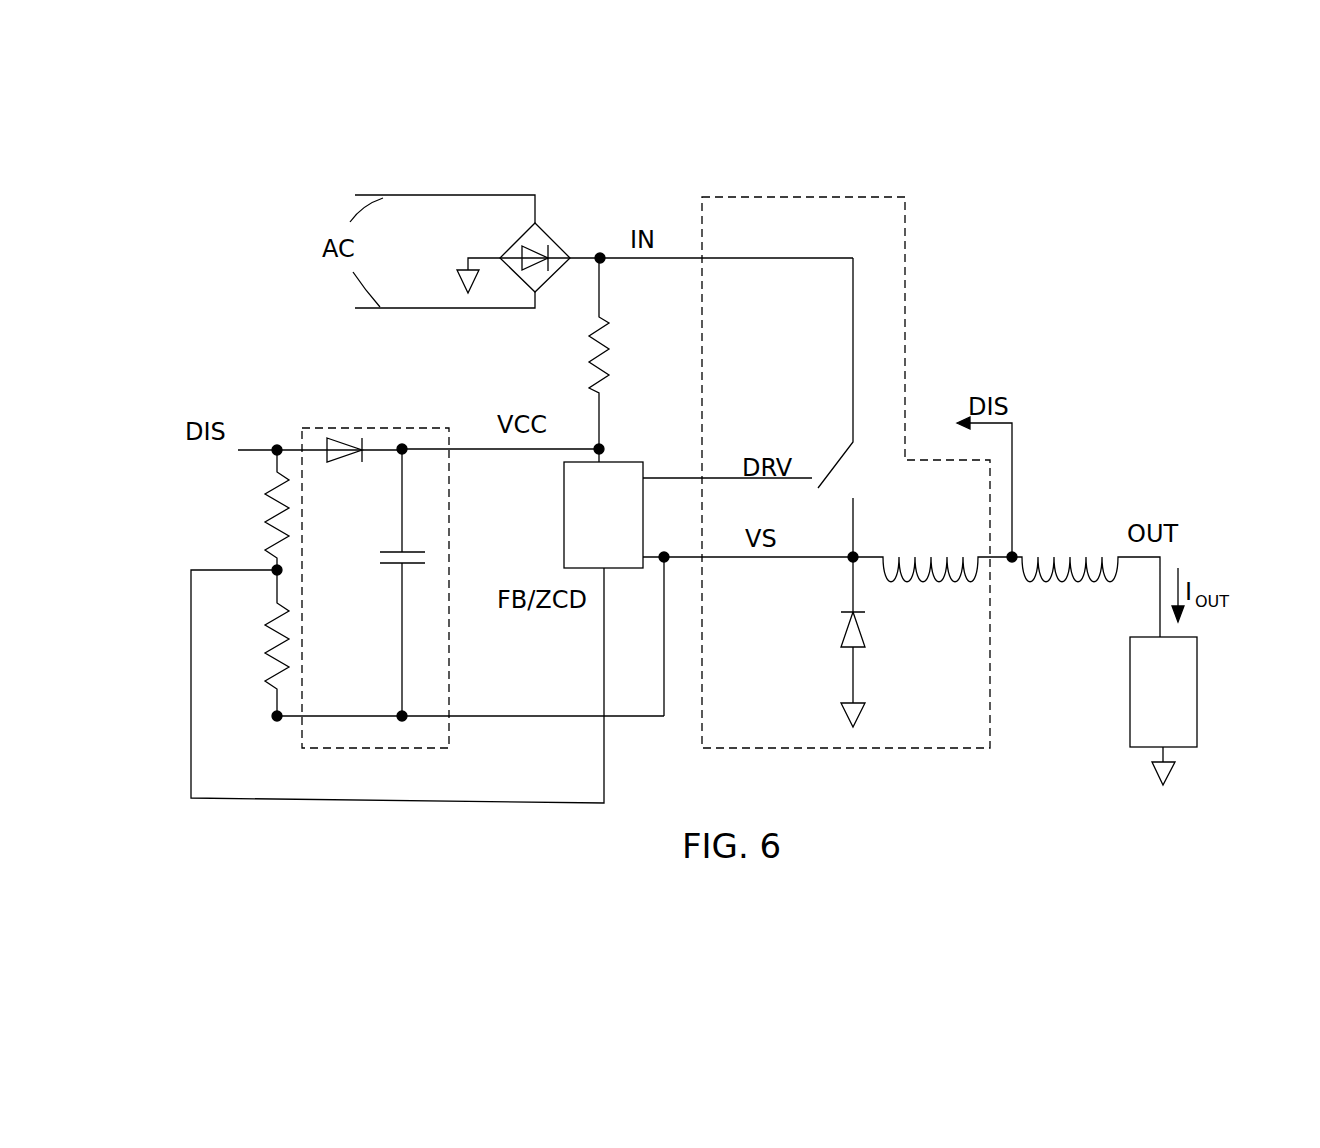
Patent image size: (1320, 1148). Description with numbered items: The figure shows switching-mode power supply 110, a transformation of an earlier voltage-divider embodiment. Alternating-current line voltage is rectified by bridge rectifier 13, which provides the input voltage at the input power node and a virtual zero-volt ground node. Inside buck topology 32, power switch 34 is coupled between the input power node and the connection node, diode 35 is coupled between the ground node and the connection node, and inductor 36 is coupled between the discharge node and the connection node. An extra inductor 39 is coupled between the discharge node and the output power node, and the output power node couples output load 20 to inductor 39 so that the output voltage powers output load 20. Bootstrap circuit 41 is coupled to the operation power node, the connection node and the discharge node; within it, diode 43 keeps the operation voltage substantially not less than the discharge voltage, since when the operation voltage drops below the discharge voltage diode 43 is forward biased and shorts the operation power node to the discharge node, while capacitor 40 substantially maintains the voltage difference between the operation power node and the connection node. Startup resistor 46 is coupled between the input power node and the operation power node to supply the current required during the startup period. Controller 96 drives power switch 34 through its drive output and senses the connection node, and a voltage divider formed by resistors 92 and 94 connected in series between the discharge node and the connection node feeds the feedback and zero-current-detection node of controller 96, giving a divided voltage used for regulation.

The bridge rectifier 13 is at (522, 238).
The switching-mode power supply 110 is at (648, 172).
The startup resistor 46 is at (588, 315).
The controller 96 is at (617, 533).
The bootstrap circuit 41 is at (433, 428).
The diode 43 is at (350, 442).
The capacitor 40 is at (375, 558).
The resistor 92 is at (267, 543).
The resistor 94 is at (267, 650).
The buck topology 32 is at (792, 197).
The power switch 34 is at (855, 469).
The diode 35 is at (842, 635).
The inductor 36 is at (955, 582).
The inductor 39 is at (1095, 583).
The output load 20 is at (1177, 714).